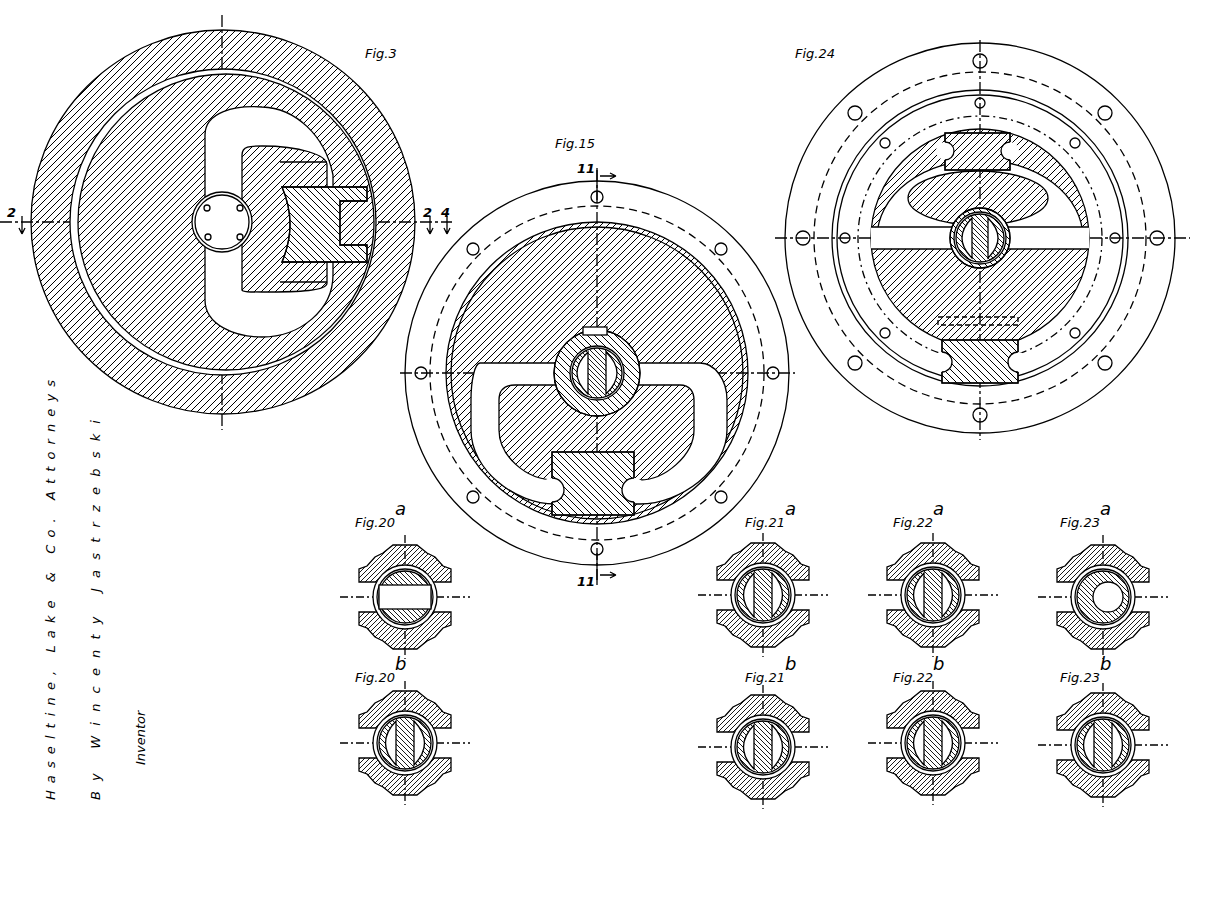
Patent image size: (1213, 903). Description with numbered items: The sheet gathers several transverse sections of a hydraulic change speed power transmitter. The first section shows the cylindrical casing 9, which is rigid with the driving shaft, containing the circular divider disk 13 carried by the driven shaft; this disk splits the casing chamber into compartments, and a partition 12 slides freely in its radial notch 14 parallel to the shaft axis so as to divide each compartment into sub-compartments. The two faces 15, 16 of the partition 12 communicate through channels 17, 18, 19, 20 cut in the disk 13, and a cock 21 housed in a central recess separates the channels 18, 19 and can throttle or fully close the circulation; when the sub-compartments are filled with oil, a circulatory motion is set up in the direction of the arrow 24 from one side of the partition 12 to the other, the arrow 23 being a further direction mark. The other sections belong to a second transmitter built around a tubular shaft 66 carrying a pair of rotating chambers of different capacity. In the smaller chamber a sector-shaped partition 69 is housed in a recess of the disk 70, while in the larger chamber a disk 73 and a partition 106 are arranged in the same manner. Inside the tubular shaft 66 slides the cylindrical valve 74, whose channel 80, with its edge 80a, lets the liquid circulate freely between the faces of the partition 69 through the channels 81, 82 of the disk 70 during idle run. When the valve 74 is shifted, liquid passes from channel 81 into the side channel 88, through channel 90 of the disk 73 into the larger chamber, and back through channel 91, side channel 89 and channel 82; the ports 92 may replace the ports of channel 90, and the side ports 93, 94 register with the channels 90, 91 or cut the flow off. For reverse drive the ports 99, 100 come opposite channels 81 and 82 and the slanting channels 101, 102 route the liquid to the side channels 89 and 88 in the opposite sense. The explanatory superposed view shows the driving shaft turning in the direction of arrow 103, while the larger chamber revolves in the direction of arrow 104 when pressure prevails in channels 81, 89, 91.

In FIG. 3, the casing 9 is at (162, 396).
In FIG. 3, the partition 12 is at (358, 206).
In FIG. 3, the divider disk 13 is at (82, 150).
In FIG. 3, the radial notch 14 is at (337, 310).
In FIG. 3, the face of the partition 15 is at (347, 153).
In FIG. 3, the face of the partition 16 is at (382, 381).
In FIG. 3, the channel 17 is at (284, 130).
In FIG. 3, the channel 18 is at (198, 137).
In FIG. 3, the channel 19 is at (157, 320).
In FIG. 3, the channel 20 is at (281, 338).
In FIG. 3, the cock 21 is at (197, 240).
In FIG. 3, the direction of rotation 23 is at (345, 413).
In FIG. 3, the arrow 24 is at (236, 152).
In FIG. 20B, the tubular shaft 66 is at (422, 775).
In FIG. 21B, the tubular shaft 66 is at (782, 775).
In FIG. 22B, the tubular shaft 66 is at (950, 775).
In FIG. 23B, the tubular shaft 66 is at (1120, 775).
In FIG. 24, the sector-shaped partition 69 is at (987, 130).
In FIG. 20A, the disk 70 is at (380, 565).
In FIG. 21A, the disk 70 is at (750, 566).
In FIG. 22A, the disk 70 is at (955, 566).
In FIG. 23A, the disk 70 is at (1125, 567).
In FIG. 15, the disk 73 is at (700, 305).
In FIG. 20B, the disk 73 is at (432, 712).
In FIG. 21B, the disk 73 is at (785, 715).
In FIG. 22B, the disk 73 is at (968, 725).
In FIG. 23B, the disk 73 is at (1135, 727).
In FIG. 15, the cylindrical valve 74 is at (632, 332).
In FIG. 20B, the cylindrical valve 74 is at (382, 715).
In FIG. 21A, the cylindrical valve 74 is at (780, 565).
In FIG. 21B, the cylindrical valve 74 is at (745, 715).
In FIG. 22A, the cylindrical valve 74 is at (920, 566).
In FIG. 22B, the cylindrical valve 74 is at (955, 715).
In FIG. 23A, the cylindrical valve 74 is at (1090, 567).
In FIG. 23B, the cylindrical valve 74 is at (1125, 715).
In FIG. 20A, the channel 80 is at (440, 603).
In FIG. 20A, the slot edge 80a is at (440, 595).
In FIG. 24, the channel 81 is at (903, 180).
In FIG. 20A, the channel 81 is at (373, 590).
In FIG. 21A, the channel 81 is at (733, 588).
In FIG. 22A, the channel 81 is at (905, 590).
In FIG. 23A, the channel 81 is at (1080, 612).
In FIG. 24, the channel 82 is at (1050, 183).
In FIG. 20A, the channel 82 is at (440, 583).
In FIG. 21A, the channel 82 is at (795, 603).
In FIG. 22A, the channel 82 is at (965, 590).
In FIG. 23A, the channel 82 is at (1135, 610).
In FIG. 15, the side channel 88 is at (579, 333).
In FIG. 24, the side channel 88 is at (877, 223).
In FIG. 20B, the side channel 88 is at (385, 752).
In FIG. 21A, the side channel 88 is at (735, 600).
In FIG. 21B, the side channel 88 is at (735, 755).
In FIG. 22A, the side channel 88 is at (910, 605).
In FIG. 23B, the side channel 88 is at (1080, 758).
In FIG. 15, the side channel 89 is at (640, 352).
In FIG. 24, the side channel 89 is at (1043, 220).
In FIG. 20B, the side channel 89 is at (430, 738).
In FIG. 21A, the side channel 89 is at (795, 618).
In FIG. 21B, the side channel 89 is at (795, 740).
In FIG. 22A, the side channel 89 is at (965, 603).
In FIG. 23B, the side channel 89 is at (1130, 742).
In FIG. 15, the channel 90 is at (500, 448).
In FIG. 24, the channel 90 is at (920, 342).
In FIG. 20B, the channel 90 is at (360, 740).
In FIG. 22B, the channel 90 is at (905, 733).
In FIG. 23B, the channel 90 is at (1082, 772).
In FIG. 15, the channel 91 is at (698, 441).
In FIG. 24, the channel 91 is at (1060, 363).
In FIG. 20B, the channel 91 is at (445, 748).
In FIG. 21B, the channel 91 is at (800, 747).
In FIG. 22B, the channel 91 is at (972, 745).
In FIG. 23B, the channel 91 is at (1138, 750).
In FIG. 21A, the ports 92 is at (795, 590).
In FIG. 15, the side port 93 is at (470, 398).
In FIG. 20B, the side port 93 is at (385, 733).
In FIG. 21B, the side port 93 is at (795, 755).
In FIG. 23B, the side port 93 is at (1085, 740).
In FIG. 15, the side port 94 is at (700, 382).
In FIG. 20B, the side port 94 is at (440, 762).
In FIG. 23B, the side port 94 is at (1135, 765).
In FIG. 23A, the port 99 is at (1135, 597).
In FIG. 23A, the port 100 is at (1078, 600).
In FIG. 20A, the slanting channel 101 is at (440, 625).
In FIG. 23A, the slanting channel 101 is at (1078, 590).
In FIG. 20A, the slanting channel 102 is at (430, 565).
In FIG. 23A, the slanting channel 102 is at (1135, 587).
In FIG. 24, the arrow 103 is at (929, 126).
In FIG. 24, the arrow 104 is at (1153, 277).
In FIG. 15, the partition 106 is at (630, 516).
In FIG. 24, the partition 106 is at (960, 387).